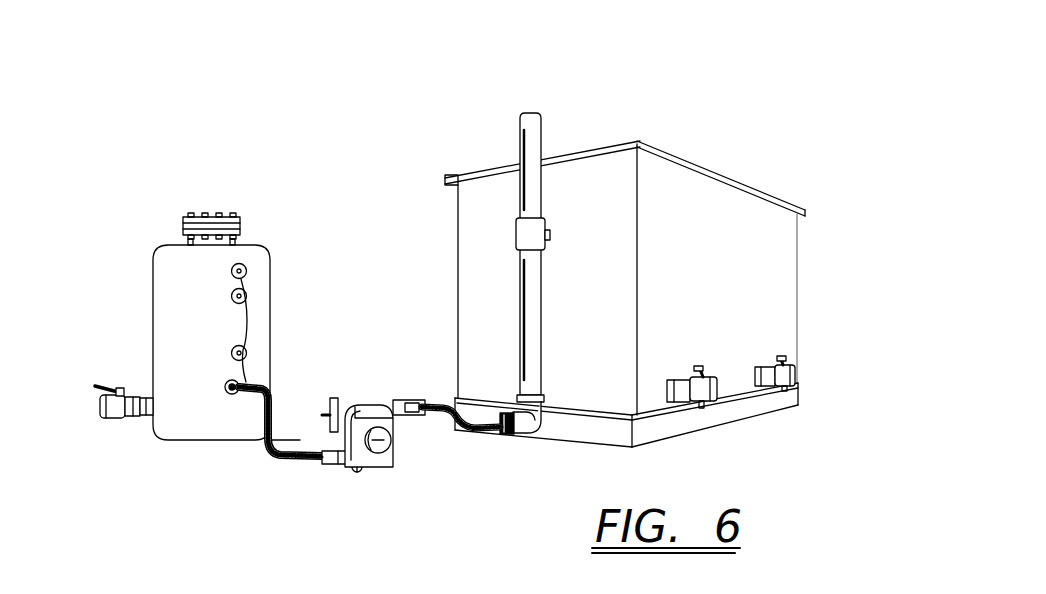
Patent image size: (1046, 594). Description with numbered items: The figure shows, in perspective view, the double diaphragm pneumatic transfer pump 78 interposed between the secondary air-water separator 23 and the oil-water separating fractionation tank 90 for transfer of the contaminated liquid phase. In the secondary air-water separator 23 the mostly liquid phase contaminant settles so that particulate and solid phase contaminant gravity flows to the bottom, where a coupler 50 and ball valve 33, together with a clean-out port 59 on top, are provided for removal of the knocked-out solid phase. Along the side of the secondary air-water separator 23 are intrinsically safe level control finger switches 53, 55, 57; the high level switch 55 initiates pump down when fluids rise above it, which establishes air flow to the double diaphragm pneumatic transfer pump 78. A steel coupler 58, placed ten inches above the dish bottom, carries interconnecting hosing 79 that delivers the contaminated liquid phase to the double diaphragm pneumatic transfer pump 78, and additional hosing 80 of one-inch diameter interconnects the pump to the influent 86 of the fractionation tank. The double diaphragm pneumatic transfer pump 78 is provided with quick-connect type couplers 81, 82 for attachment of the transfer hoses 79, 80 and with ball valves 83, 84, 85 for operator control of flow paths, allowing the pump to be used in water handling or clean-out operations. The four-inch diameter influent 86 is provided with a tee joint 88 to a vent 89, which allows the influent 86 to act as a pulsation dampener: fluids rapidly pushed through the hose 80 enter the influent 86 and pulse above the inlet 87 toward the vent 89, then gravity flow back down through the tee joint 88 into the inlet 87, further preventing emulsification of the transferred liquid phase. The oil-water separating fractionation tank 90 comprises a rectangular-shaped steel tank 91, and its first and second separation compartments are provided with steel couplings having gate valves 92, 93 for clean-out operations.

The secondary air-water separator 23 is at (170, 268).
The ball valve 33 is at (108, 415).
The coupler 50 is at (91, 392).
The level control finger switch 53 is at (243, 268).
The high level switch 55 is at (243, 296).
The level control finger switch 57 is at (245, 353).
The steel coupler 58 is at (228, 392).
The clean-out port 59 is at (183, 222).
The double diaphragm pneumatic transfer pump 78 is at (385, 440).
The interconnecting hosing 79 is at (247, 443).
The hosing 80 is at (473, 436).
The quick-connect type coupler 81 is at (333, 462).
The quick-connect type coupler 82 is at (375, 405).
The ball valve 83 is at (322, 509).
The ball valve 84 is at (363, 470).
The ball valve 85 is at (417, 398).
The influent 86 is at (530, 300).
The inlet 87 is at (550, 236).
The tee joint 88 is at (518, 230).
The vent 89 is at (530, 130).
The oil-water separating fractionation tank 90 is at (675, 269).
The rectangular-shaped steel tank 91 is at (762, 294).
The gate valve 92 is at (697, 402).
The gate valve 93 is at (787, 390).